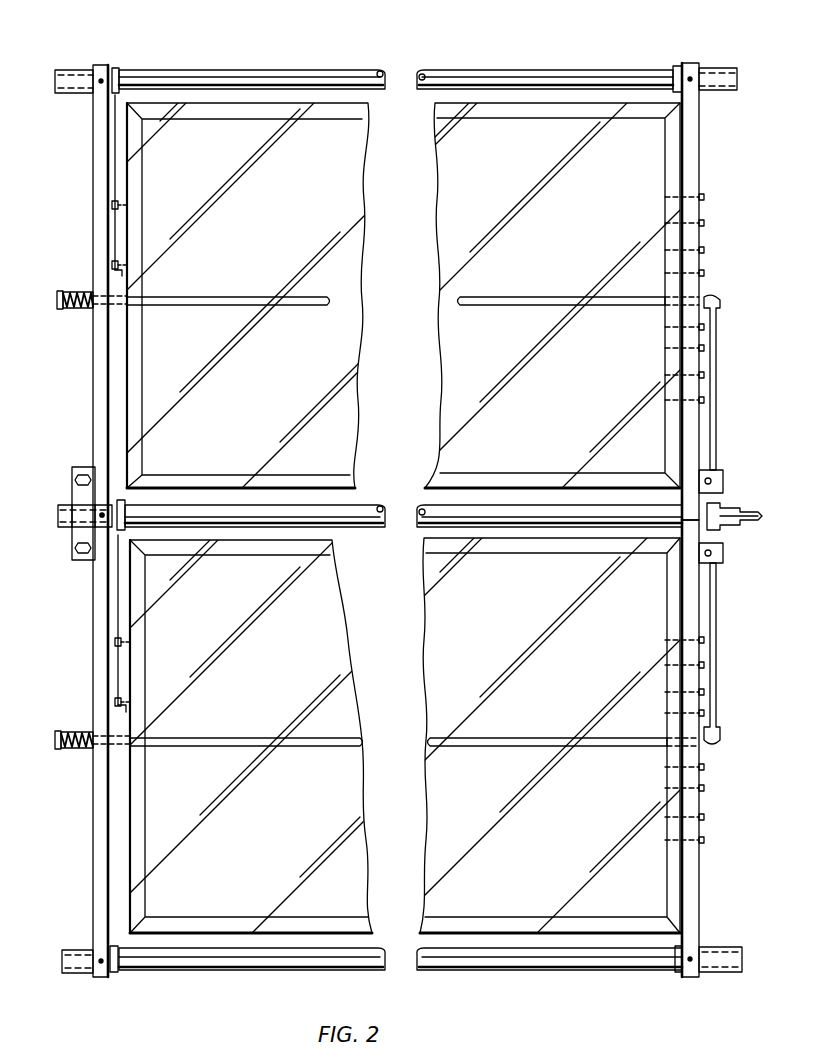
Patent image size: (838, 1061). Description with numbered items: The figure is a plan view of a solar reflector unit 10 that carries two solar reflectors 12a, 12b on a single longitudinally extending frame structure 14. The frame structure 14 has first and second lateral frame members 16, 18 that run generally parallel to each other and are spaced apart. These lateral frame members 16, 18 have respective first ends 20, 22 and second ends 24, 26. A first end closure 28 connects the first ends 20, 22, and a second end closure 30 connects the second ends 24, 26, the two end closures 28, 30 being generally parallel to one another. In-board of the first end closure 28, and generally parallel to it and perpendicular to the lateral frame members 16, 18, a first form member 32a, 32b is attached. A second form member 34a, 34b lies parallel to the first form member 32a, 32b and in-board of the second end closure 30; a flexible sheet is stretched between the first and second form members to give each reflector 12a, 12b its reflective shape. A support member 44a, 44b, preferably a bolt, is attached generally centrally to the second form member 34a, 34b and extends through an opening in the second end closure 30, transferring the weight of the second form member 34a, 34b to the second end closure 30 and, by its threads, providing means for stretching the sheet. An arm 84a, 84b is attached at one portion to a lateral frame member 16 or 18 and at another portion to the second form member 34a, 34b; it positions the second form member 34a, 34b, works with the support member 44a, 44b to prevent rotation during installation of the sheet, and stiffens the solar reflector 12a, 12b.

The solar reflector unit 10 is at (487, 42).
The solar reflector 12a is at (686, 162).
The solar reflector 12b is at (690, 802).
The frame structure 14 is at (199, 70).
The first lateral frame member 16 is at (250, 82).
The second lateral frame member 18 is at (256, 962).
The first end of first lateral frame member 20 is at (668, 64).
The first end of second lateral frame member 22 is at (678, 973).
The second end of first lateral frame member 24 is at (127, 70).
The second end of second lateral frame member 26 is at (120, 979).
The first end closure 28 is at (702, 212).
The second end closure 30 is at (90, 233).
The first form member 32a is at (702, 262).
The first form member 32b is at (688, 870).
The second form member 34a is at (123, 386).
The second form member 34b is at (125, 869).
The support member 44a is at (58, 300).
The support member 44b is at (60, 738).
The arm 84a is at (112, 177).
The arm 84b is at (115, 620).